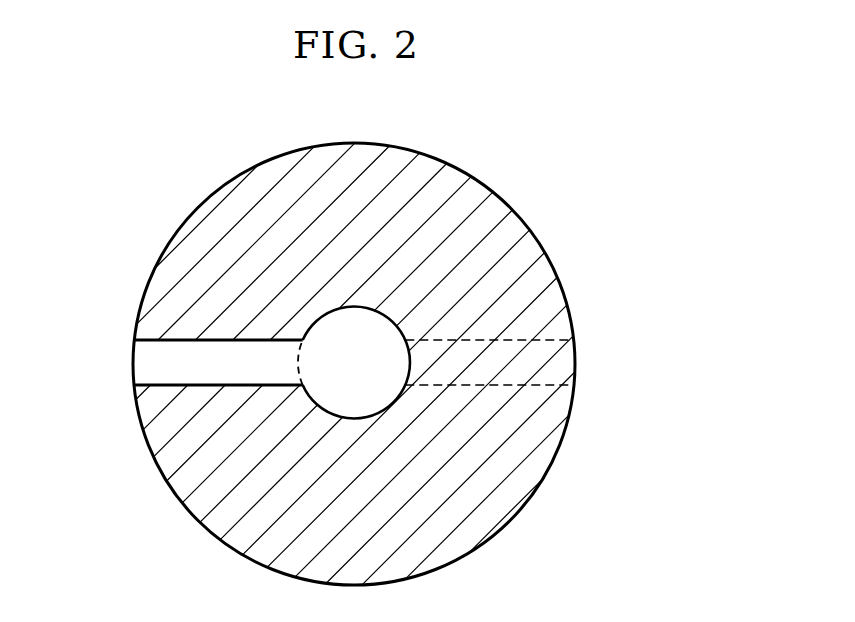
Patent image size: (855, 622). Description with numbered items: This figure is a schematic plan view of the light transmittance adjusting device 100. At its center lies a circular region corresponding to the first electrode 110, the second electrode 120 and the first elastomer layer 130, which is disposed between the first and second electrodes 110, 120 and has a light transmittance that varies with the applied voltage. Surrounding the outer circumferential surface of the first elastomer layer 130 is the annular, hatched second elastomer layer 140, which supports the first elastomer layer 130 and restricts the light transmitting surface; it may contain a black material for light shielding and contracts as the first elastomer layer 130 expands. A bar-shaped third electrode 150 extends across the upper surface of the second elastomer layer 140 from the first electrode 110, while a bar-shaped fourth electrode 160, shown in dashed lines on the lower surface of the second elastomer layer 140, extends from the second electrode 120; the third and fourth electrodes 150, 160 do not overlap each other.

The light transmittance adjusting device 100 is at (148, 136).
The first electrode 110 is at (395, 347).
The second electrode 120 is at (354, 363).
The first elastomer layer 130 is at (354, 363).
The second elastomer layer 140 is at (473, 498).
The third electrode 150 is at (133, 362).
The fourth electrode 160 is at (505, 387).